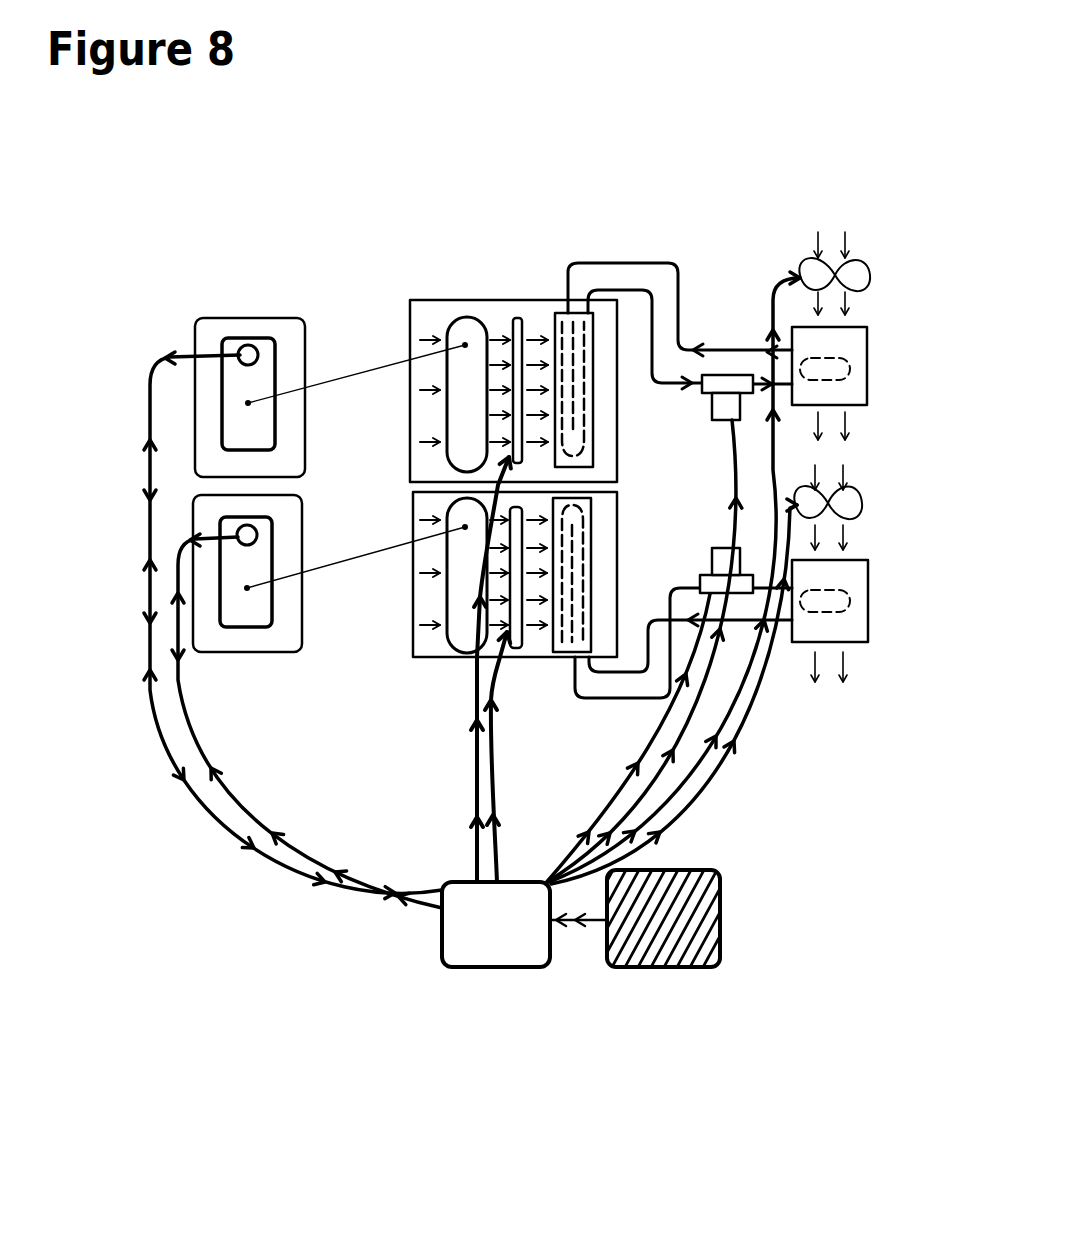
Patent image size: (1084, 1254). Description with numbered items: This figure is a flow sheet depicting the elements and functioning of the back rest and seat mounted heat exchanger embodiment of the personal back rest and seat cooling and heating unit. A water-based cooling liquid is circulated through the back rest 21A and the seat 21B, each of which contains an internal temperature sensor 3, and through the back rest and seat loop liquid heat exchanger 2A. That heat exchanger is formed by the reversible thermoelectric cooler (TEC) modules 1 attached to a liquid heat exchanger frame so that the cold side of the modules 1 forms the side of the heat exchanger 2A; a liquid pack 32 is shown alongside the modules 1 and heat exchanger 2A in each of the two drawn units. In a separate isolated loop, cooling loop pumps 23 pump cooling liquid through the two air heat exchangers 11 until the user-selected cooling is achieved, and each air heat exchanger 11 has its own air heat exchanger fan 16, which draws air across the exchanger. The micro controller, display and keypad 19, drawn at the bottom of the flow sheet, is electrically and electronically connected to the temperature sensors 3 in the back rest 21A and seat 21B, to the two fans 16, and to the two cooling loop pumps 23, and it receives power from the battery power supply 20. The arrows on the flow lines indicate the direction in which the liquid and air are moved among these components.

The Reversible Thermoelectric Cooler (TEC) Module 1 is at (516, 320).
The Back Rest and Seat Loop Liquid Heat Exchanger 2A is at (572, 330).
The Temperature Sensor 3 is at (240, 343).
The Air Heat Exchanger 11 is at (860, 348).
The Air Heat Exchanger Fan 16 is at (868, 278).
The Micro Controller, Display and Keypad 19 is at (497, 967).
The Battery Power Supply 20 is at (670, 967).
The Back Rest 21A is at (307, 337).
The Seat 21B is at (303, 632).
The Cooling Loop Pump 23 is at (714, 384).
The Liquid Pack 32 is at (460, 318).